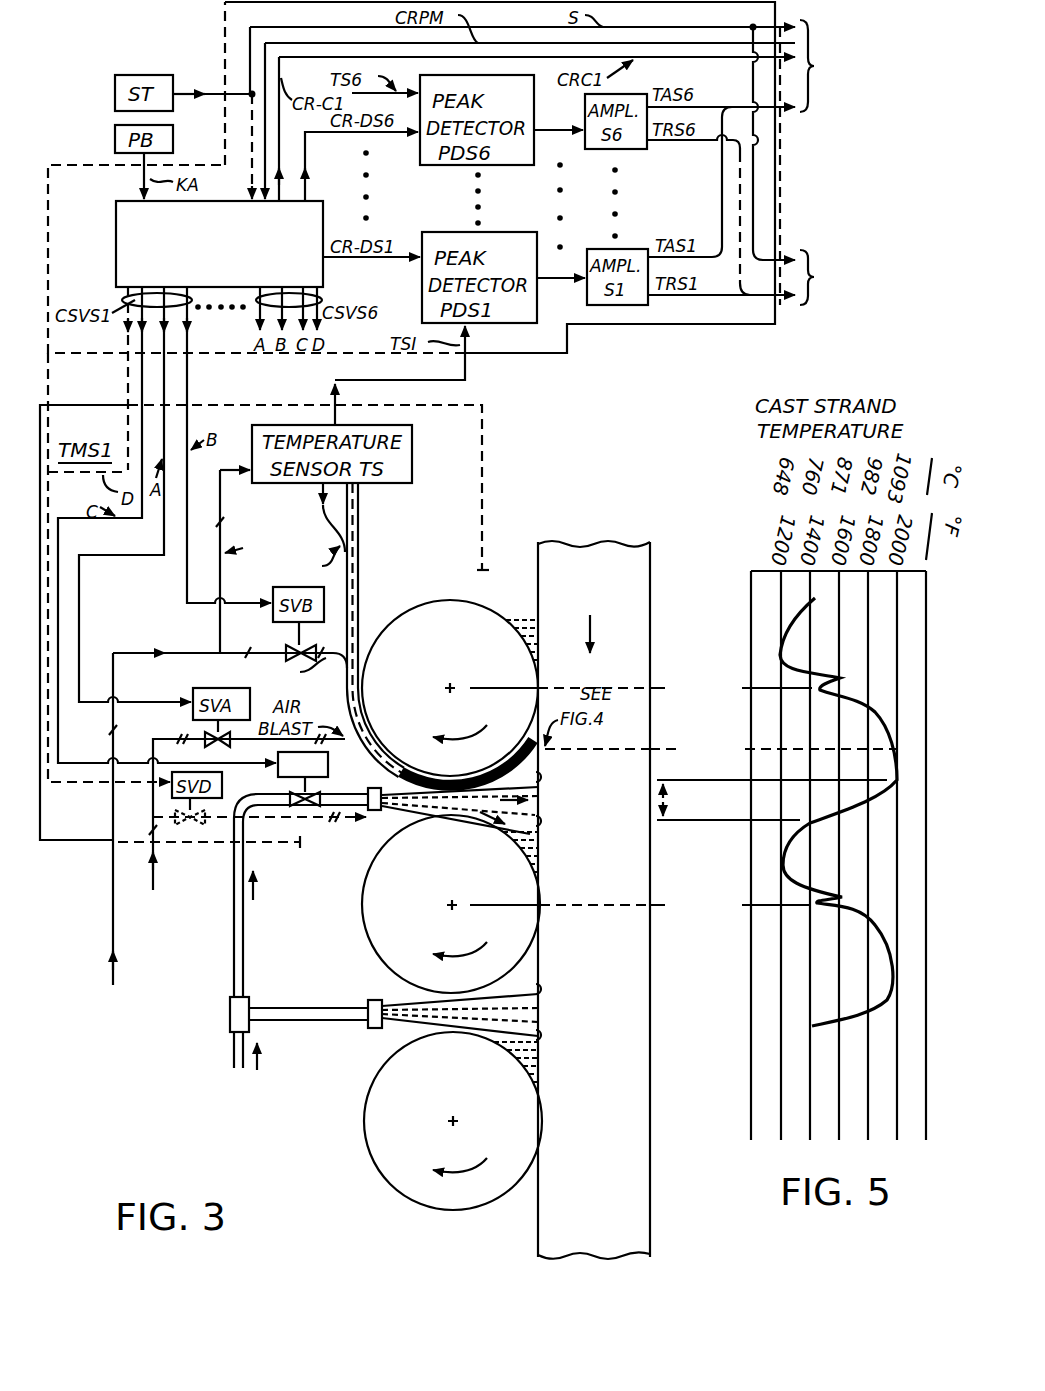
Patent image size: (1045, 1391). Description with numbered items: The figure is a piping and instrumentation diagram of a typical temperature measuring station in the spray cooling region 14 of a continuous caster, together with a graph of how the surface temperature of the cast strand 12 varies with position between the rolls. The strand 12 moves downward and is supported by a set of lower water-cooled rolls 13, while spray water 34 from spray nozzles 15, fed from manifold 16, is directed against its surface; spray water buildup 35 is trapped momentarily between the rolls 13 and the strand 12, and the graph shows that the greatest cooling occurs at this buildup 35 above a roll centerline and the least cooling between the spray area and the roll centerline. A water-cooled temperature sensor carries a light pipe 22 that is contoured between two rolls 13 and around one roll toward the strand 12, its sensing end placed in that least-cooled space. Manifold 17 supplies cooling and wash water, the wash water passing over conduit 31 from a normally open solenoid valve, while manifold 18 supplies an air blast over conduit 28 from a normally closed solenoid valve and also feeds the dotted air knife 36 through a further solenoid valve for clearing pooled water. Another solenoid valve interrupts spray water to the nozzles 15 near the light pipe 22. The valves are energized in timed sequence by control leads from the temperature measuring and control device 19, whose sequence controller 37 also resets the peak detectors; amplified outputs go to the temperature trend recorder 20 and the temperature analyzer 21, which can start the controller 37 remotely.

In FIG. 3, the cast strand 12 is at (590, 542).
In FIG. 5, the cast strand 12 is at (722, 620).
In FIG. 3, the water-cooled rolls 13 is at (440, 602).
In FIG. 5, the water-cooled rolls 13 is at (672, 678).
In FIG. 3, the spray cooling region 14 is at (325, 1199).
In FIG. 3, the spray nozzles 15 is at (368, 794).
In FIG. 3, the spray water manifold 16 is at (233, 1055).
In FIG. 3, the cooling and wash water manifold 17 is at (222, 503).
In FIG. 3, the air blast manifold 18 is at (156, 878).
In FIG. 3, the temperature measuring and control device 19 is at (848, 384).
In FIG. 3, the temperature trend recorder 20 is at (932, 321).
In FIG. 3, the temperature analyzer 21 is at (892, 123).
In FIG. 3, the light pipe 22 is at (364, 523).
In FIG. 5, the light pipe 22 is at (662, 770).
In FIG. 3, the air blast conduit 28 is at (316, 764).
In FIG. 3, the wash water conduit 31 is at (338, 666).
In FIG. 3, the spray water 34 is at (538, 802).
In FIG. 5, the spray water 34 is at (728, 838).
In FIG. 3, the spray water buildup 35 is at (520, 618).
In FIG. 3, the air knife 36 is at (370, 825).
In FIG. 3, the sequence controller 37 is at (219, 244).